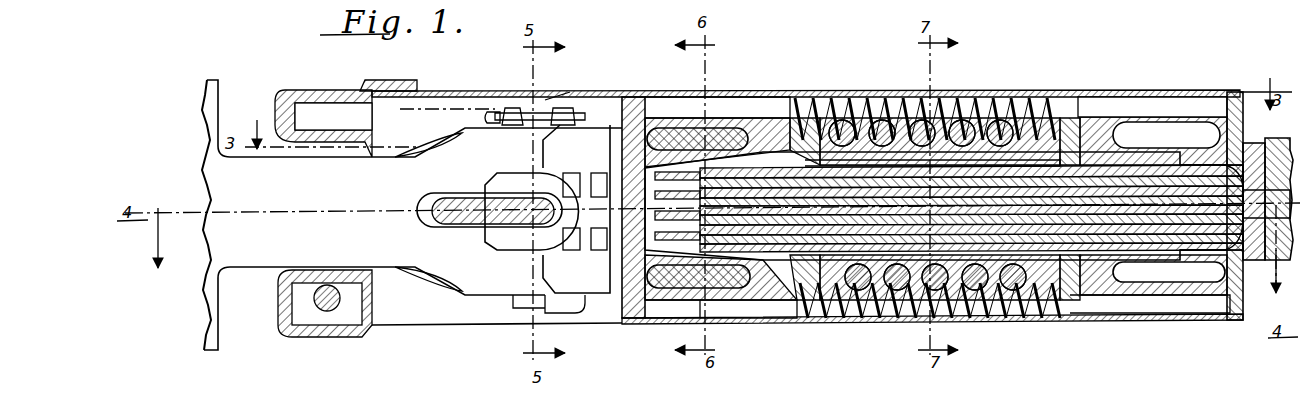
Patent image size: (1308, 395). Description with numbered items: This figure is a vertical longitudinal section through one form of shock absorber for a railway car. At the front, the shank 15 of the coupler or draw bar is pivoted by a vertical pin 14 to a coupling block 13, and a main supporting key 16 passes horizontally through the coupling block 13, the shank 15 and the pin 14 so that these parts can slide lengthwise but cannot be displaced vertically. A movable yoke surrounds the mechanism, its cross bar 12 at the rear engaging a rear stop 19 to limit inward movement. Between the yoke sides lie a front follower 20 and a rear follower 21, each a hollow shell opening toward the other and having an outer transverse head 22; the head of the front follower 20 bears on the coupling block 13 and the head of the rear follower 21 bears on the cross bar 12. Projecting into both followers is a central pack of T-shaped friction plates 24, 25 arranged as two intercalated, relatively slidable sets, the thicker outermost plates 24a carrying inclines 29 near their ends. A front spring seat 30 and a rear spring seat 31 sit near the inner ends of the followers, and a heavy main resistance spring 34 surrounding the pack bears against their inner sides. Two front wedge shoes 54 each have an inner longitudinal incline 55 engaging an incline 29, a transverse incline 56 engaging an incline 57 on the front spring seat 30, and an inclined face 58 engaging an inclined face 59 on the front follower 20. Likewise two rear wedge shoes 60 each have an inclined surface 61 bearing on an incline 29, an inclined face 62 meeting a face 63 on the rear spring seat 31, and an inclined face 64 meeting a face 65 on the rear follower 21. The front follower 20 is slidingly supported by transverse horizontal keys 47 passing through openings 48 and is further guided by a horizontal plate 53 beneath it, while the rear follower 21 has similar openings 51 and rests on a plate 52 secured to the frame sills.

The cross bar 12 is at (1255, 160).
The coupling block 13 is at (547, 209).
The vertical pin 14 is at (512, 300).
The shank 15 is at (412, 215).
The main supporting key 16 is at (448, 218).
The rear stop 19 is at (1268, 262).
The front follower 20 is at (716, 132).
The rear follower 21 is at (1152, 107).
The transverse head 22 is at (630, 150).
The friction plates 24 is at (655, 236).
The outer plates 24a is at (885, 105).
The friction plates 25 is at (1218, 205).
The incline 29 is at (1215, 186).
The front spring seat 30 is at (845, 318).
The rear spring seat 31 is at (985, 318).
The main resistance spring 34 is at (980, 118).
The transverse horizontal keys 47 is at (680, 133).
The horizontal transverse openings 48 is at (700, 115).
The horizontal transverse openings 51 is at (1169, 202).
The plate 52 is at (1198, 320).
The horizontal plate 53 is at (632, 322).
The front wedge shoes 54 is at (822, 118).
The inner longitudinal incline 55 is at (921, 140).
The transverse incline 56 is at (843, 118).
The incline 57 is at (858, 118).
The inclined face 58 is at (790, 118).
The inclined face 59 is at (758, 118).
The rear wedge shoes 60 is at (1062, 118).
The inner longitudinal inclined surface 61 is at (1134, 205).
The inner inclined face 62 is at (1072, 118).
The inclined face 63 is at (1040, 118).
The inclined face 64 is at (935, 217).
The inclined face 65 is at (1100, 118).